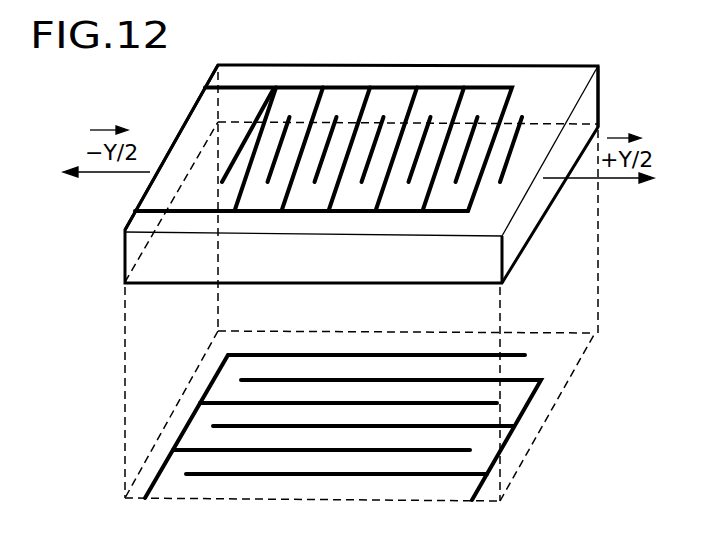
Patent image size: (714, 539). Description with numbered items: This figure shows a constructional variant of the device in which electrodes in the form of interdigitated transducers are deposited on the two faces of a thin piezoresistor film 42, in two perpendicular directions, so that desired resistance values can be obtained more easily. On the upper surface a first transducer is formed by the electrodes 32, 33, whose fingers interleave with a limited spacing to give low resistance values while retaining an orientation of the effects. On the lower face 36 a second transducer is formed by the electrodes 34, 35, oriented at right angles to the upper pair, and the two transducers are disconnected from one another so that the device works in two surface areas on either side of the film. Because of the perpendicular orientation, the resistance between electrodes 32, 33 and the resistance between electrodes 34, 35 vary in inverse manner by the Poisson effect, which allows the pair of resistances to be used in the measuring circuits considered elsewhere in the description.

The electrode 32 is at (383, 87).
The electrode 33 is at (302, 212).
The electrode 34 is at (192, 408).
The electrode 35 is at (509, 437).
The lower face 36 is at (537, 238).
The piezoresistor film 42 is at (598, 95).